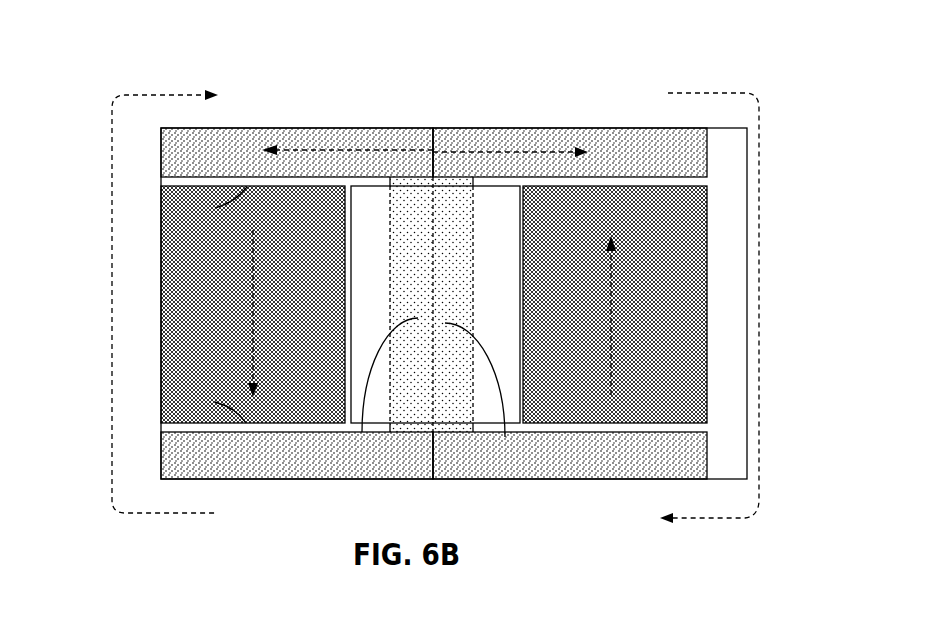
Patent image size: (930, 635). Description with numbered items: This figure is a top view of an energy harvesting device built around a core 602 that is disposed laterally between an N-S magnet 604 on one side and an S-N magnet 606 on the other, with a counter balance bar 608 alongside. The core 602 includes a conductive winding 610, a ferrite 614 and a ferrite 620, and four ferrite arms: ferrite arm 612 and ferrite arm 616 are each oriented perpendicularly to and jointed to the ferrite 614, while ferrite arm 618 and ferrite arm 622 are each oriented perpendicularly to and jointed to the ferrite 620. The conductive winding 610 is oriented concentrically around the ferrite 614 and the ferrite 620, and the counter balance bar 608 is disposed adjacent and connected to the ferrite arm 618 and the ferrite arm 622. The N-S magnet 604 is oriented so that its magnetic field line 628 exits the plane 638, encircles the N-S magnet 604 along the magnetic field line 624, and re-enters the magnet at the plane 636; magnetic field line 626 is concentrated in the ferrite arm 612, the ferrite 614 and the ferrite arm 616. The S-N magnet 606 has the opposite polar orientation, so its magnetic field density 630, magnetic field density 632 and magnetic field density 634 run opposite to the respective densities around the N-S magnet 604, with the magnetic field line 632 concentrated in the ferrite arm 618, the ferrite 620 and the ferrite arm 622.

The core 602 is at (383, 67).
The N-S magnet 604 is at (278, 220).
The S-N magnet 606 is at (531, 221).
The counter balance bar 608 is at (733, 243).
The conductive winding 610 is at (370, 210).
The ferrite arm 612 is at (168, 163).
The ferrite 614 is at (362, 432).
The ferrite arm 616 is at (173, 472).
The ferrite arm 618 is at (639, 166).
The ferrite 620 is at (505, 437).
The ferrite arm 622 is at (644, 471).
The magnetic field line 624 is at (180, 92).
The magnetic field line 626 is at (335, 149).
The magnetic field line 628 is at (253, 310).
The magnetic field density 630 is at (672, 90).
The magnetic field line 632 is at (553, 153).
The magnetic field density 634 is at (611, 310).
The plane 636 is at (215, 208).
The plane 638 is at (215, 402).